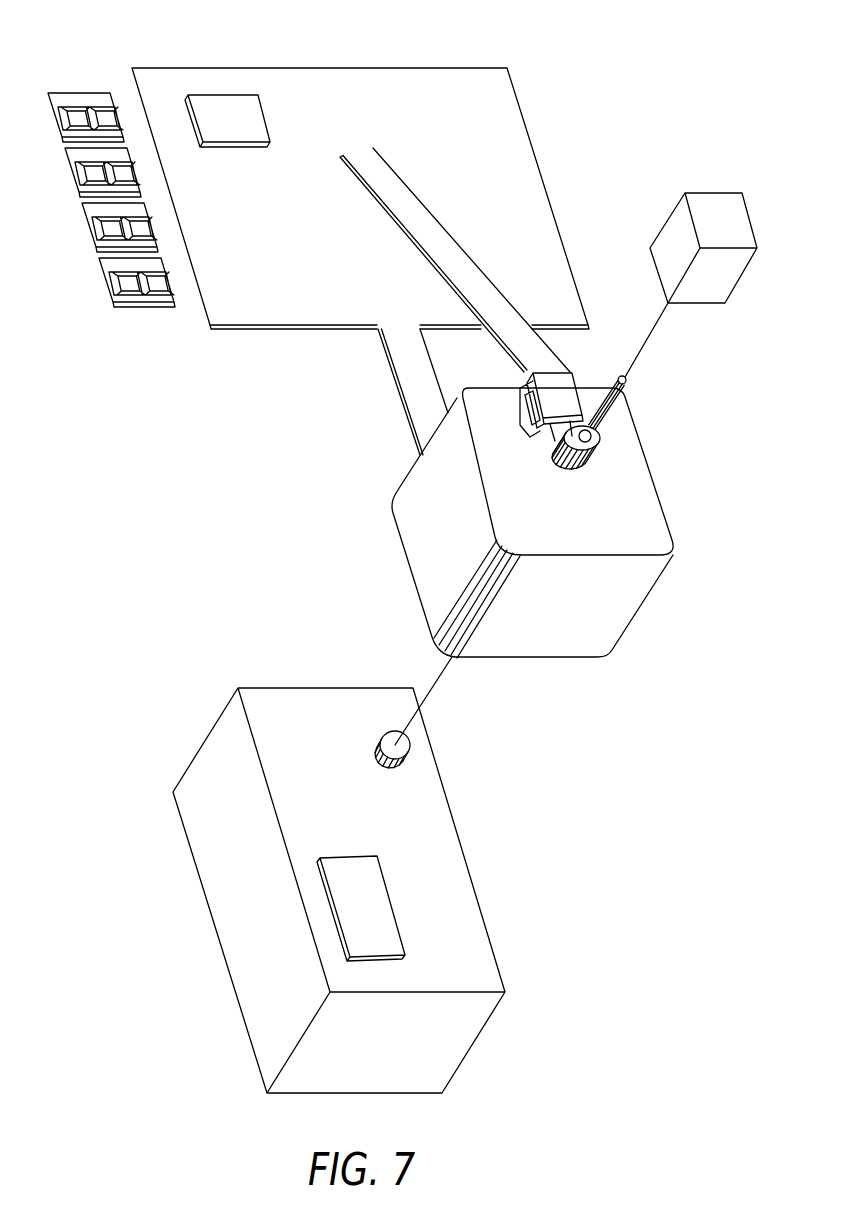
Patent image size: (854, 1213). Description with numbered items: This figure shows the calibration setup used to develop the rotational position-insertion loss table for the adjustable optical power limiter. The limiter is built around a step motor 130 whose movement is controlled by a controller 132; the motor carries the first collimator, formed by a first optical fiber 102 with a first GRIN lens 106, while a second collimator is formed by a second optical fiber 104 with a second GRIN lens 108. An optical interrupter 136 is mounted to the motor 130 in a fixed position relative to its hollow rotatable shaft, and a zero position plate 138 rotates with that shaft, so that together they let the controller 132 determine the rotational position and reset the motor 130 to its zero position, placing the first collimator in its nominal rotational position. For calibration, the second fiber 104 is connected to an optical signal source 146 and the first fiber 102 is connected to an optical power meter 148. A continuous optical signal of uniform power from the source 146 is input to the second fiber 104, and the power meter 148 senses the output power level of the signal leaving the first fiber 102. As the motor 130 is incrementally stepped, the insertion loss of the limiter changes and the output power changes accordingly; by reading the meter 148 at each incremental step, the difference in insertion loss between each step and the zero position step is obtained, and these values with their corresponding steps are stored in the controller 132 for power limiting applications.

The first optical fiber 102 is at (437, 673).
The second optical fiber 104 is at (650, 342).
The first GRIN lens 106 is at (598, 438).
The second GRIN lens 108 is at (630, 380).
The step motor 130 is at (655, 535).
The controller 132 is at (402, 82).
The optical interrupter 136 is at (580, 377).
The zero position plate 138 is at (545, 428).
The optical signal source 146 is at (718, 203).
The optical power meter 148 is at (215, 862).